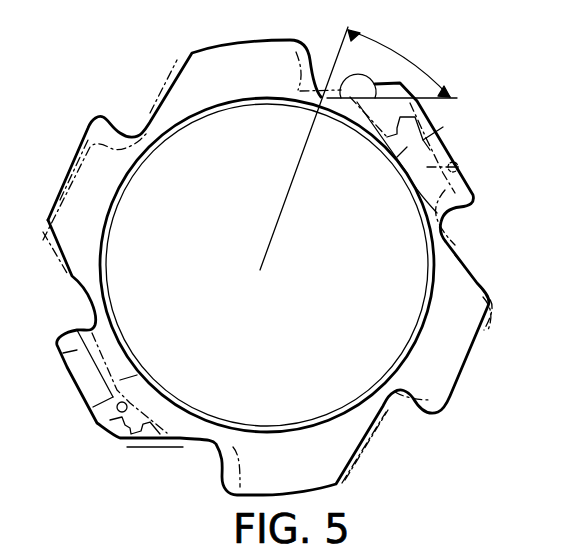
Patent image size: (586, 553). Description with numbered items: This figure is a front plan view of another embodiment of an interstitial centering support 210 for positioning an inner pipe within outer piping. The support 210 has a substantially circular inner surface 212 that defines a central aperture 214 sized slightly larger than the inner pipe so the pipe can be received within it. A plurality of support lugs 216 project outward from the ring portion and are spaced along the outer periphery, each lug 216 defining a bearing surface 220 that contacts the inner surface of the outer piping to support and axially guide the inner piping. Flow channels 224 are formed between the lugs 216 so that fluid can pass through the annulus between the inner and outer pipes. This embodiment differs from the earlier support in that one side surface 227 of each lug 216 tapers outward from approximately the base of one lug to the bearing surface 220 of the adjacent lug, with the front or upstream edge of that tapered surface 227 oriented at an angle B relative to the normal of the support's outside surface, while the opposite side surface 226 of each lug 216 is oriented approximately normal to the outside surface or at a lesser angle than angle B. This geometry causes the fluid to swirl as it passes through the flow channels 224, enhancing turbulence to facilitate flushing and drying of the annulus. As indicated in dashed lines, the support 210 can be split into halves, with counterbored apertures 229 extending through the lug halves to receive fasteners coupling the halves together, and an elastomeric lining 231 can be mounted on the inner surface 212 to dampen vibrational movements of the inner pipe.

The centering support 210 is at (475, 100).
The inner surface 212 is at (292, 433).
The central aperture 214 is at (143, 210).
The support lug 216 is at (460, 344).
The bearing surface 220 is at (457, 132).
The flow channel 224 is at (390, 416).
The side surface 226 is at (463, 207).
The tapered side surface 227 is at (345, 98).
The counterbored aperture 229 is at (440, 167).
The elastomeric lining 231 is at (180, 132).
The angle B is at (416, 62).